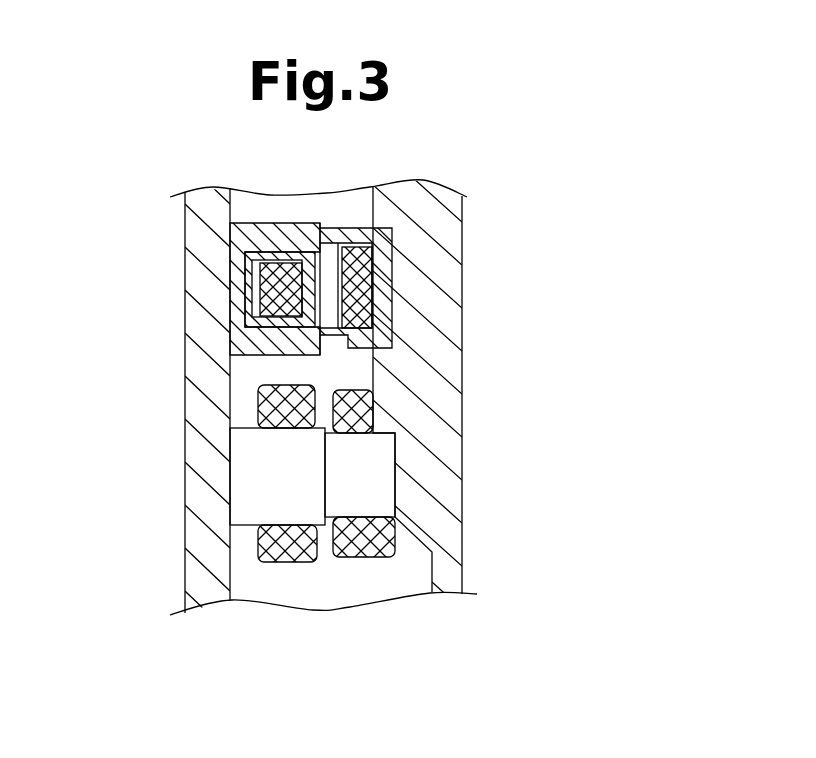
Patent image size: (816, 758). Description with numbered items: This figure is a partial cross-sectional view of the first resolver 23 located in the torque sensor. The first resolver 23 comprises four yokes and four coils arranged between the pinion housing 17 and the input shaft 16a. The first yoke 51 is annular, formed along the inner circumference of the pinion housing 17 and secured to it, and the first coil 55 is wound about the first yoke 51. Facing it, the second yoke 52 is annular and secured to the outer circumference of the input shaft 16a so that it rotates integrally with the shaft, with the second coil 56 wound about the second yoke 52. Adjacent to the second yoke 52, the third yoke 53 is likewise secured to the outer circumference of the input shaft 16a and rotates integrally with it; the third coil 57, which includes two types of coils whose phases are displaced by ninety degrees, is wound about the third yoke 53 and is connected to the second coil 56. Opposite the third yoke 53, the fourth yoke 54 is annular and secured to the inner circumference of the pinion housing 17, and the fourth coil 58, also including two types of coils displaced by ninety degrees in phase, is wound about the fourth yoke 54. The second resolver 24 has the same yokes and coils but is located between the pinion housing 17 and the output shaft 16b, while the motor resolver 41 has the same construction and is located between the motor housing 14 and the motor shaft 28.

The motor housing 14 is at (141, 397).
The pinion housing 17 is at (193, 248).
The input shaft 16a is at (440, 352).
The output shaft 16b is at (526, 375).
The motor shaft 28 is at (526, 375).
The first resolver 23 is at (250, 363).
The second resolver 24 is at (221, 399).
The motor resolver 41 is at (221, 399).
The first yoke 51 is at (255, 224).
The second yoke 52 is at (381, 238).
The third yoke 53 is at (382, 510).
The fourth yoke 54 is at (235, 450).
The first coil 55 is at (295, 250).
The second coil 56 is at (345, 242).
The third coil 57 is at (350, 557).
The fourth coil 58 is at (263, 550).